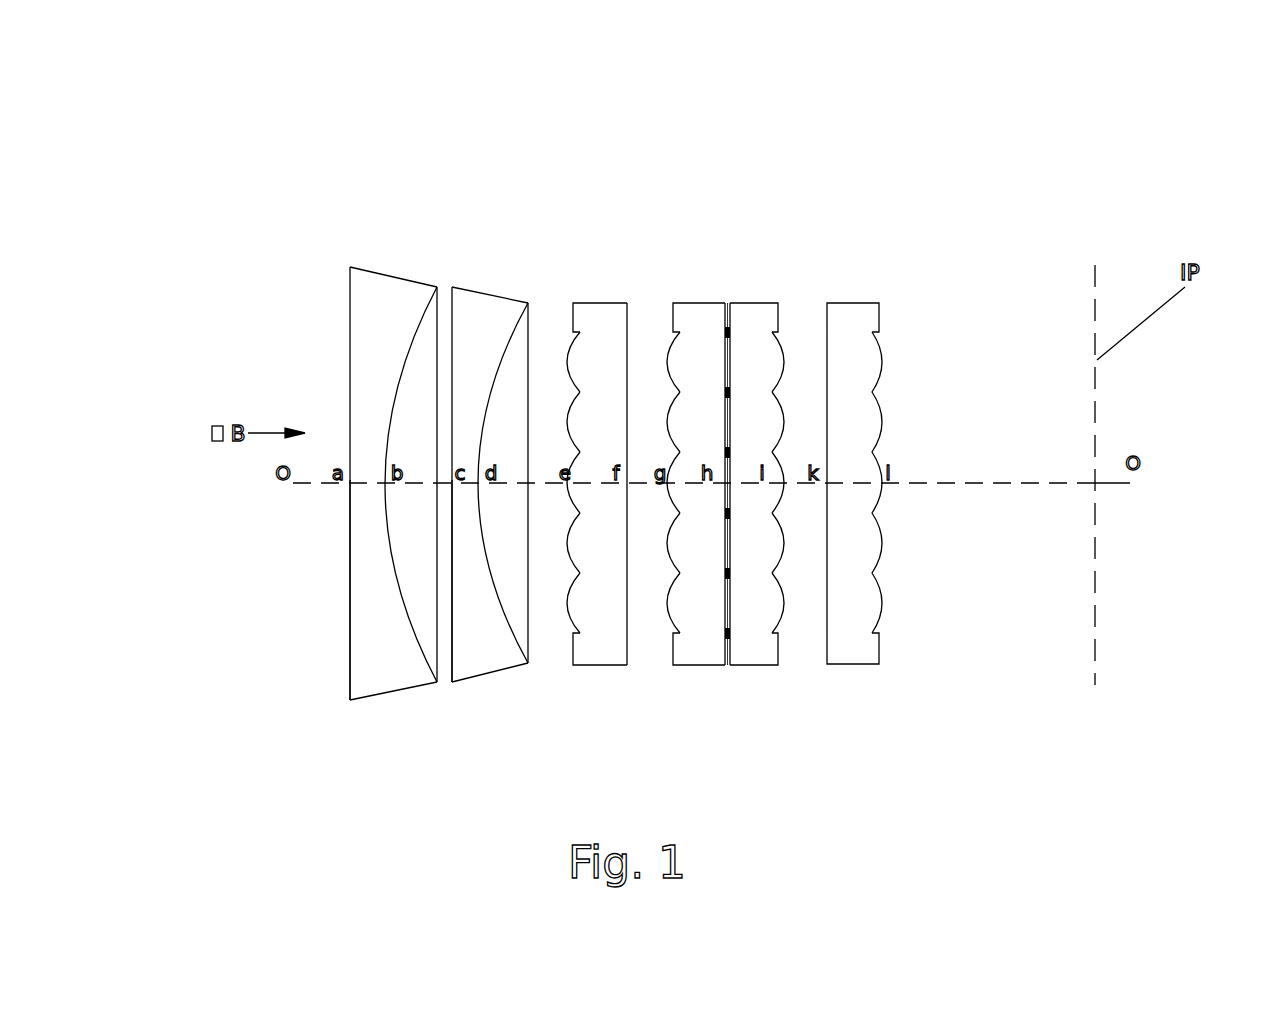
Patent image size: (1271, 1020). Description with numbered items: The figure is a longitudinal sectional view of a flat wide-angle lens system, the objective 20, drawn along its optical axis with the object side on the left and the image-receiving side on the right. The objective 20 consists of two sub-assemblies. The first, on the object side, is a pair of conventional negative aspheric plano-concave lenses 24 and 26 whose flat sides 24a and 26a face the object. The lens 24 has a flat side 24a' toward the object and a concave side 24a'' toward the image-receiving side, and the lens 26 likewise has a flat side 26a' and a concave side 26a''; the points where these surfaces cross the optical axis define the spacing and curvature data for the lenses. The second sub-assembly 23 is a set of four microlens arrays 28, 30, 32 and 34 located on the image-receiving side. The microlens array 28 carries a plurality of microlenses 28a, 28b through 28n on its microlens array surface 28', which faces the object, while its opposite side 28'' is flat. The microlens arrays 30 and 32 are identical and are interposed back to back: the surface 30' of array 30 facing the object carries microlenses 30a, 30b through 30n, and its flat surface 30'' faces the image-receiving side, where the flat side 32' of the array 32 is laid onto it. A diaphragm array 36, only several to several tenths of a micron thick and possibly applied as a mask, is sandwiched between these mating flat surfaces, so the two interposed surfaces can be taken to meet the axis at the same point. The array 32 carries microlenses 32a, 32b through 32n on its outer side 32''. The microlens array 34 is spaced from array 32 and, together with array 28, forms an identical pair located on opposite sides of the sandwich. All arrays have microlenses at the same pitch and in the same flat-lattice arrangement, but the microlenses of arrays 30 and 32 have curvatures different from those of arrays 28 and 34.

The objective 20 is at (808, 124).
The second sub-assembly 23 is at (752, 243).
The negative aspheric lens 24 is at (390, 660).
The flat side of lens 24 24a is at (253, 483).
The flat side 24a' is at (277, 590).
The concave side 24a'' is at (349, 484).
The negative aspheric lens 26 is at (478, 660).
The flat side of lens 26 26a is at (333, 484).
The flat side 26a' is at (327, 581).
The concave side 26a'' is at (506, 517).
The microlens array 28 is at (471, 459).
The microlens 28a is at (570, 352).
The microlens 28b is at (570, 408).
The microlens 28n is at (571, 600).
The microlens array surface 28' is at (411, 537).
The flat side 28'' is at (664, 524).
The microlens array 30 is at (825, 435).
The microlens 30a is at (670, 353).
The microlens 30b is at (677, 443).
The microlens 30n is at (676, 600).
The surface 30' is at (843, 443).
The surface 30'' is at (891, 484).
The microlens array 32 is at (870, 517).
The microlens 32a is at (784, 353).
The microlens 32b is at (779, 417).
The microlens 32n is at (782, 602).
The flat side 32' is at (849, 484).
The side 32'' is at (891, 568).
The microlens array 34 is at (853, 653).
The diaphragm array 36 is at (727, 302).